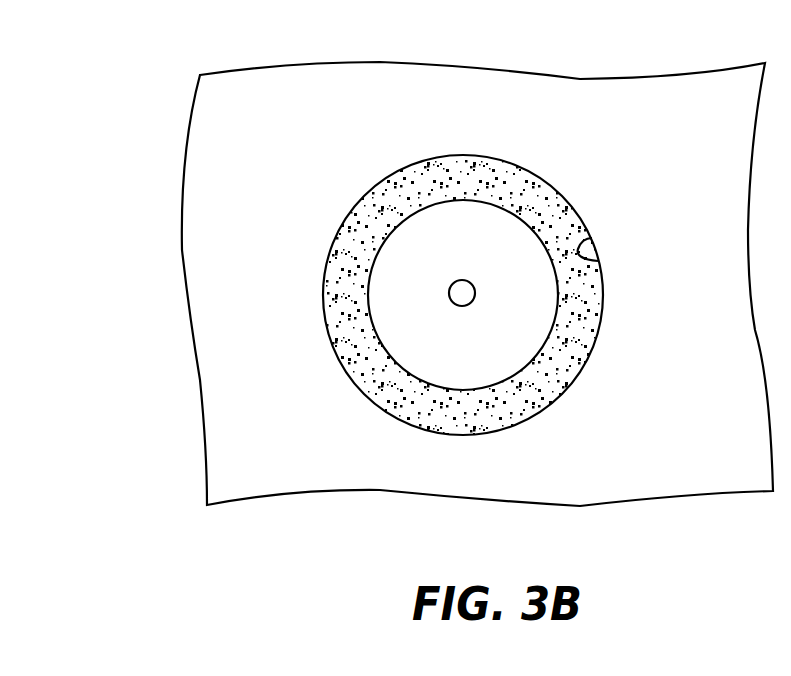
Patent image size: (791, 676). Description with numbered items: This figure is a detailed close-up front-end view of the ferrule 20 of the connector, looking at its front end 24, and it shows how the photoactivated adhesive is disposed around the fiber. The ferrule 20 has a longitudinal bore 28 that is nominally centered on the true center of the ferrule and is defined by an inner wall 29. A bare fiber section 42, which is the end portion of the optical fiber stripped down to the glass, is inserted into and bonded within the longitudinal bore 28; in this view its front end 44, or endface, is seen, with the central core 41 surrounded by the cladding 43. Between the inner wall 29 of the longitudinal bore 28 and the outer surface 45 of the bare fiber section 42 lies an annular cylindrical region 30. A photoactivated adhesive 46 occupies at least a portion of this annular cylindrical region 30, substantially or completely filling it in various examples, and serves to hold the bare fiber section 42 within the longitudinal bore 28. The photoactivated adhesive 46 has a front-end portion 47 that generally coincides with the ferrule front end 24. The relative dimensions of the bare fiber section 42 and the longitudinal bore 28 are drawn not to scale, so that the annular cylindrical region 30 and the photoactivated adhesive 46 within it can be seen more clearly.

The ferrule 20 is at (152, 265).
The front end 24 is at (235, 98).
The longitudinal bore 28 is at (350, 210).
The inner wall 29 is at (598, 261).
The annular cylindrical region 30 is at (361, 359).
The central core 41 is at (470, 283).
The bare fiber section 42 is at (544, 228).
The cladding 43 is at (497, 230).
The front end 44 is at (528, 310).
The outer surface 45 is at (432, 205).
The photoactivated adhesive 46 is at (350, 302).
The front-end portion 47 is at (548, 380).